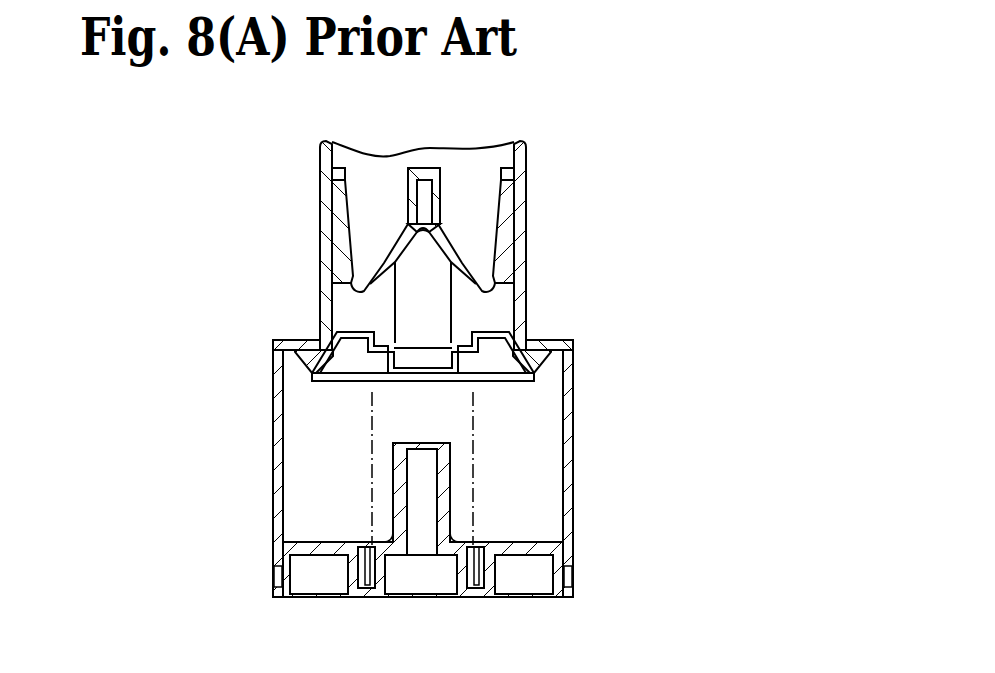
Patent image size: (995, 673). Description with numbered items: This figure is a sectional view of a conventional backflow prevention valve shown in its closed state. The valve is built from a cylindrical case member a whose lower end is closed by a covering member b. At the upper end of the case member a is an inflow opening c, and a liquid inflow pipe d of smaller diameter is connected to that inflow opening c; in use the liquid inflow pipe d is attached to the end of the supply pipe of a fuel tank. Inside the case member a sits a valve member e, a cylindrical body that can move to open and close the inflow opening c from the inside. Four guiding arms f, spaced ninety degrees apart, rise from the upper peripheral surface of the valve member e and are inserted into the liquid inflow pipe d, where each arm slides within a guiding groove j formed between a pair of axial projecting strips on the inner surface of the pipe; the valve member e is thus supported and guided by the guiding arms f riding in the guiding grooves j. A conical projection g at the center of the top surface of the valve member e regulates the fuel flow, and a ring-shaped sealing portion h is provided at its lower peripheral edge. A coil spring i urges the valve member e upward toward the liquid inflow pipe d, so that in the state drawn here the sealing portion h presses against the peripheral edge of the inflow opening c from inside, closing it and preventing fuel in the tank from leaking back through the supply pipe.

The case member a is at (567, 442).
The covering member b is at (523, 550).
The inflow opening c is at (533, 338).
The liquid inflow pipe d is at (322, 276).
The valve member e is at (483, 310).
The guiding arm f is at (347, 226).
The conical projection g is at (447, 233).
The sealing portion h is at (540, 371).
The coil spring i is at (370, 477).
The guiding groove j is at (322, 160).